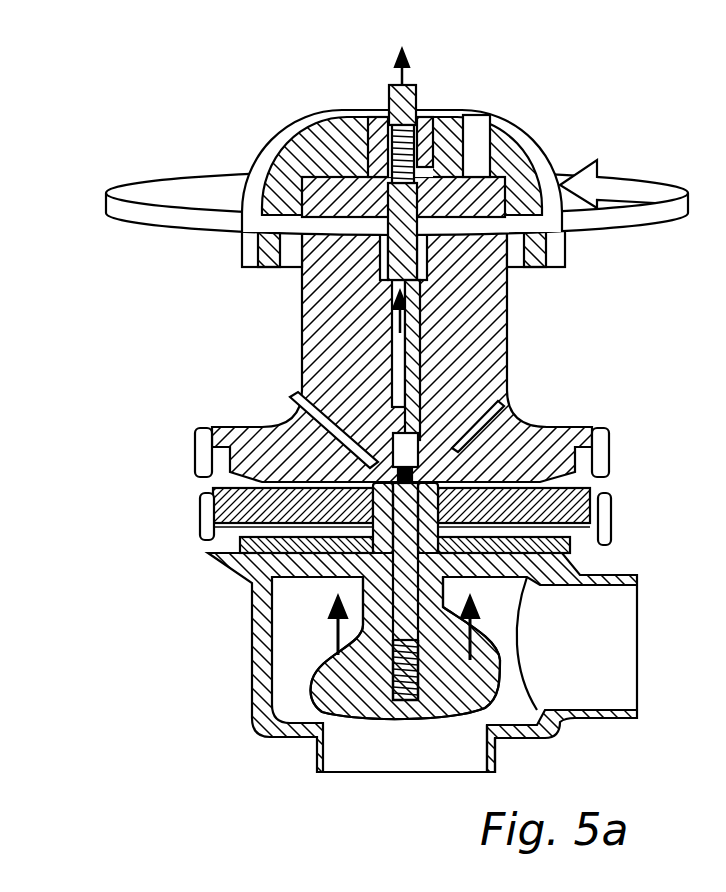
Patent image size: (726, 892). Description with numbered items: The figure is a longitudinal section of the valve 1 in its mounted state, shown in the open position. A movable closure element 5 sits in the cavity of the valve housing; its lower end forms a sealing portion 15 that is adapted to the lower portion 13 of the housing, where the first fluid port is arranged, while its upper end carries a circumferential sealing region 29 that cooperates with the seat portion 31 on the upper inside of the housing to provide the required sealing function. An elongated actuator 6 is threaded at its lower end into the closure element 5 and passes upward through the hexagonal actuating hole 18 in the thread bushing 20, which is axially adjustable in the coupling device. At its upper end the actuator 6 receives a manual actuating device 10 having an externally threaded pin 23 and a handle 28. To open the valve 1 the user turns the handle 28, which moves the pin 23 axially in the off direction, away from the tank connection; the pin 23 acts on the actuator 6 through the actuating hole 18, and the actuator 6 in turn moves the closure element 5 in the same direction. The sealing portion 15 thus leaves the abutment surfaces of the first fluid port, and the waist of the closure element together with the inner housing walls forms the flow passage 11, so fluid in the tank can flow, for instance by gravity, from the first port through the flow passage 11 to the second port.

The valve 1 is at (128, 291).
The closure element 5 is at (306, 684).
The actuator 6 is at (410, 607).
The actuating device 10 is at (239, 137).
The flow passage 11 is at (520, 697).
The lower portion of the valve housing 13 is at (497, 737).
The sealing portion 15 is at (310, 700).
The actuating hole 18 is at (445, 532).
The thread bushing 20 is at (605, 508).
The pin 23 is at (410, 467).
The handle 28 is at (540, 148).
The sealing region 29 is at (228, 570).
The seat portion 31 is at (565, 555).